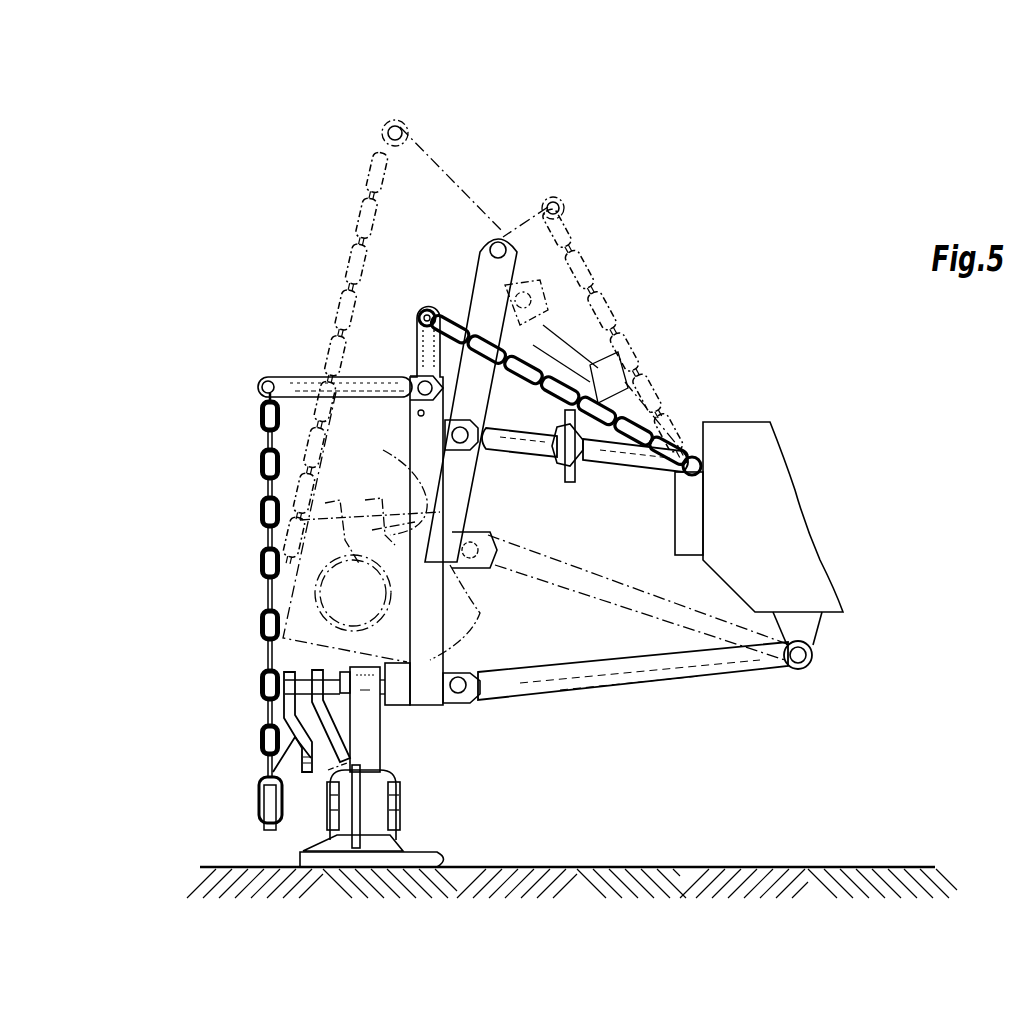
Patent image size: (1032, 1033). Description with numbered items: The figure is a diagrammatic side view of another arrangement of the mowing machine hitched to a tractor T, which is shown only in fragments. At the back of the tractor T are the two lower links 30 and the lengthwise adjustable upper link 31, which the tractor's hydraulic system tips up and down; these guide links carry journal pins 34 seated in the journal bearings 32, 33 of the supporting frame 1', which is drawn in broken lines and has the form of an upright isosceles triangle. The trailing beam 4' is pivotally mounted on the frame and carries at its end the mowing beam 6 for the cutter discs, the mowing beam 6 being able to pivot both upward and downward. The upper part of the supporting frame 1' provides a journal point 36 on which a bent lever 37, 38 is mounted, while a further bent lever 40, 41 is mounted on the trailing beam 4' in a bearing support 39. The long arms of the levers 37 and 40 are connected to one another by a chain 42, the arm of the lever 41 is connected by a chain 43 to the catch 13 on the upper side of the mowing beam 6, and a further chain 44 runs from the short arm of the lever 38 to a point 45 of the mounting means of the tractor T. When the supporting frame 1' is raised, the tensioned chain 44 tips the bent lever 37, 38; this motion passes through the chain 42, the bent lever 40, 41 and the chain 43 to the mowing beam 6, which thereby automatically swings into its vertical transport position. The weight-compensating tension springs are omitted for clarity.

The supporting frame 1' is at (399, 527).
The trailing beam 4' is at (365, 717).
The mowing beam 6 is at (494, 824).
The catch 13 is at (430, 799).
The lower link 30 is at (646, 664).
The upper link 31 is at (612, 497).
The journal bearing 32 is at (498, 750).
The journal bearing 33 is at (505, 410).
The journal pin 34 is at (508, 708).
The journal point 36 is at (418, 394).
The bent lever long arm 37 is at (317, 382).
The bent lever short arm 38 is at (425, 312).
The bearing support 39 is at (316, 702).
The bent lever long arm 40 is at (259, 746).
The bent lever arm 41 is at (302, 768).
The chain 42 is at (259, 572).
The chain 43 is at (308, 810).
The chain 44 is at (603, 360).
The mounting point 45 is at (745, 391).
The tractor T is at (850, 510).